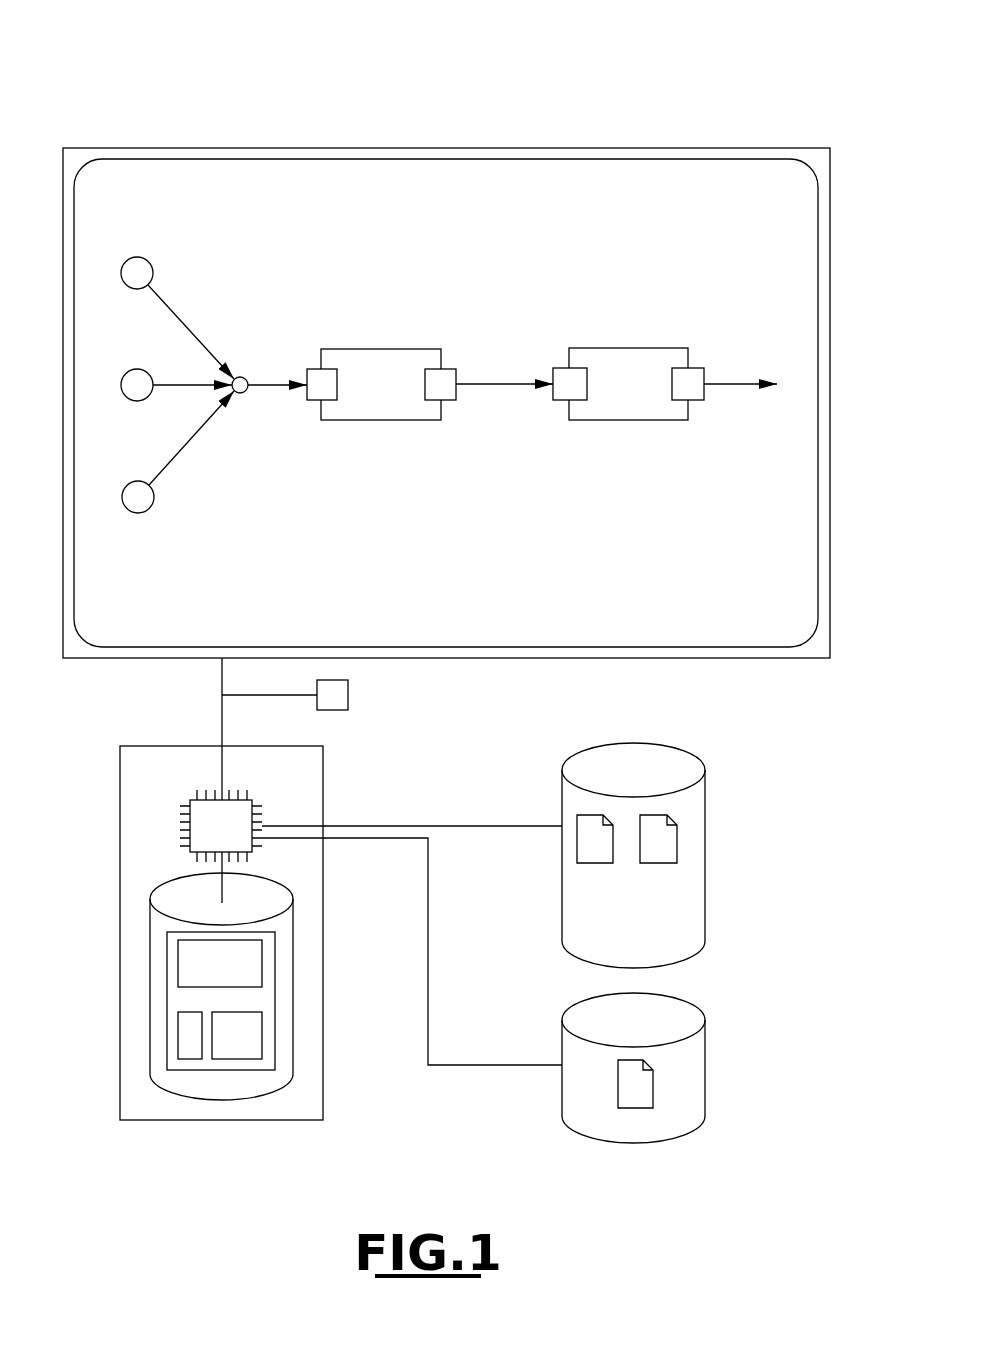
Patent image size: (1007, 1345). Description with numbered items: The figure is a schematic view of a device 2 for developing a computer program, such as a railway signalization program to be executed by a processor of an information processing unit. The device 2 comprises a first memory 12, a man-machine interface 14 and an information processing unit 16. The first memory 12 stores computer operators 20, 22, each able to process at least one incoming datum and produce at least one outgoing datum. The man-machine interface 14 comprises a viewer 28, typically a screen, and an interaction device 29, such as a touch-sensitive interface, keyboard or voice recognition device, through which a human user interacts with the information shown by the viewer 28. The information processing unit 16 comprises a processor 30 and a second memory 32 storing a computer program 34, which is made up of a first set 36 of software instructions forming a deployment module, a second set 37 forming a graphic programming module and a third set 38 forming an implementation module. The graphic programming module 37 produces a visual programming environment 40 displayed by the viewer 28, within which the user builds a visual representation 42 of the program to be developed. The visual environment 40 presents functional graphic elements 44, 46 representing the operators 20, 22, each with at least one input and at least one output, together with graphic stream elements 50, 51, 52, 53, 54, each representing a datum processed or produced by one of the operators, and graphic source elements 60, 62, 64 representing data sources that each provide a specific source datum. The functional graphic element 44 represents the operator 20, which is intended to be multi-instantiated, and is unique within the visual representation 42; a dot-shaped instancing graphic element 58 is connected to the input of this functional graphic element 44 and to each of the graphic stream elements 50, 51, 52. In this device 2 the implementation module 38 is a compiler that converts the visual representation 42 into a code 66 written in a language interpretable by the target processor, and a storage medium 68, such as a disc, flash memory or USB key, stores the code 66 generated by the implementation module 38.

The device for developing a computer program 2 is at (98, 78).
The first memory 12 is at (683, 808).
The man-machine interface 14 is at (763, 672).
The information processing unit 16 is at (120, 822).
The computer operator 20 is at (590, 843).
The computer operator 22 is at (655, 845).
The viewer 28 is at (683, 150).
The interaction device 29 is at (343, 698).
The processor 30 is at (220, 816).
The second memory 32 is at (255, 895).
The computer program 34 is at (163, 995).
The first set of software instructions 36 is at (188, 1045).
The second set of software instructions 37 is at (228, 1045).
The third set of software instructions 38 is at (230, 962).
The visual programming environment 40 is at (311, 192).
The visual representation 42 is at (637, 356).
The functional graphic element 44 is at (378, 422).
The functional graphic element 46 is at (614, 422).
The graphic stream element 50 is at (190, 325).
The graphic stream element 51 is at (172, 392).
The graphic stream element 52 is at (182, 458).
The graphic stream element 53 is at (482, 390).
The graphic stream element 54 is at (725, 390).
The instancing graphic element 58 is at (244, 378).
The graphic source element 60 is at (131, 288).
The graphic source element 62 is at (131, 399).
The graphic source element 64 is at (138, 513).
The code 66 is at (637, 1095).
The storage medium 68 is at (655, 1017).